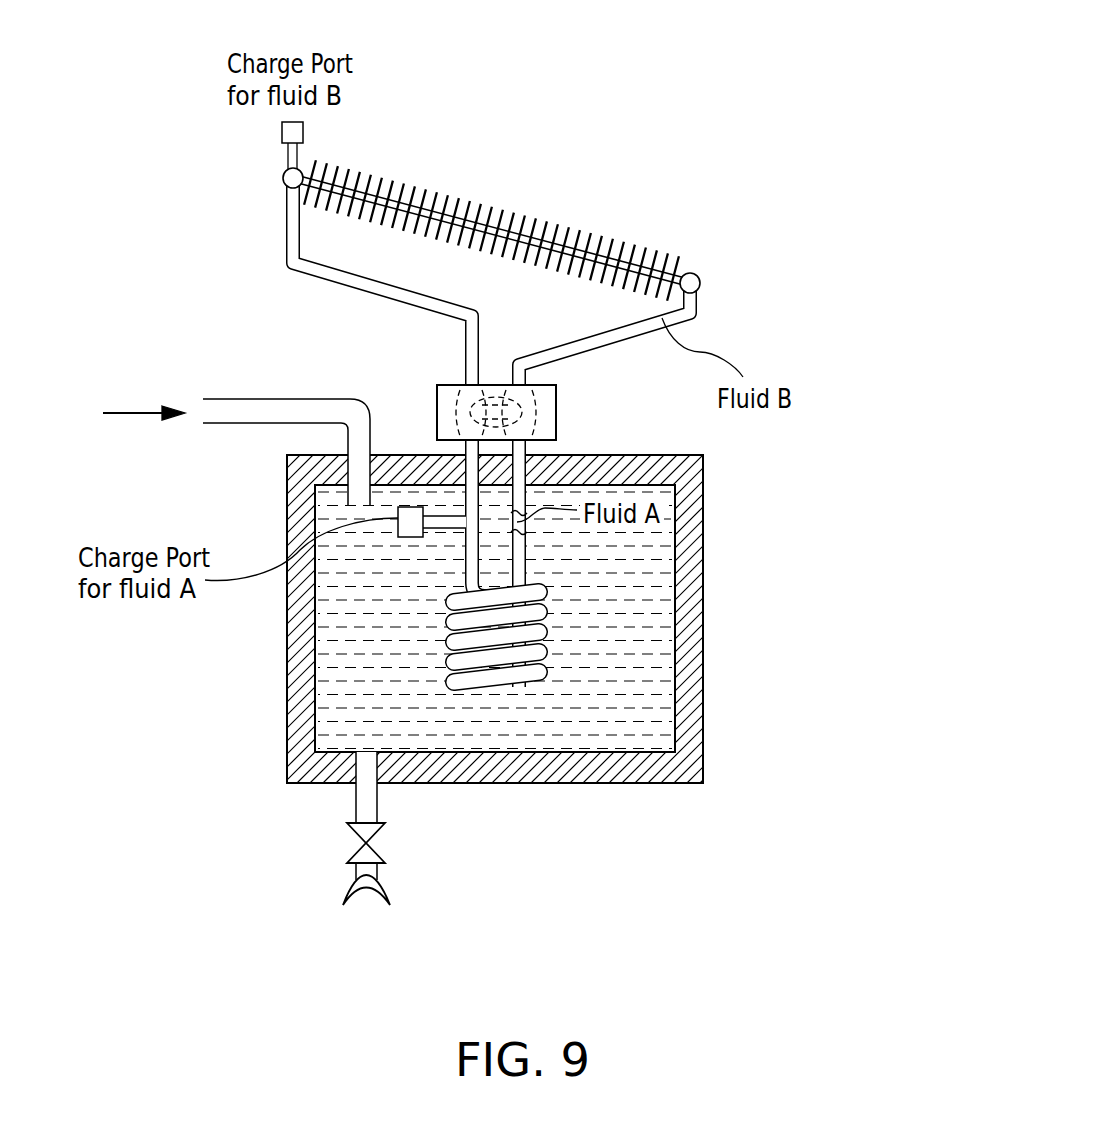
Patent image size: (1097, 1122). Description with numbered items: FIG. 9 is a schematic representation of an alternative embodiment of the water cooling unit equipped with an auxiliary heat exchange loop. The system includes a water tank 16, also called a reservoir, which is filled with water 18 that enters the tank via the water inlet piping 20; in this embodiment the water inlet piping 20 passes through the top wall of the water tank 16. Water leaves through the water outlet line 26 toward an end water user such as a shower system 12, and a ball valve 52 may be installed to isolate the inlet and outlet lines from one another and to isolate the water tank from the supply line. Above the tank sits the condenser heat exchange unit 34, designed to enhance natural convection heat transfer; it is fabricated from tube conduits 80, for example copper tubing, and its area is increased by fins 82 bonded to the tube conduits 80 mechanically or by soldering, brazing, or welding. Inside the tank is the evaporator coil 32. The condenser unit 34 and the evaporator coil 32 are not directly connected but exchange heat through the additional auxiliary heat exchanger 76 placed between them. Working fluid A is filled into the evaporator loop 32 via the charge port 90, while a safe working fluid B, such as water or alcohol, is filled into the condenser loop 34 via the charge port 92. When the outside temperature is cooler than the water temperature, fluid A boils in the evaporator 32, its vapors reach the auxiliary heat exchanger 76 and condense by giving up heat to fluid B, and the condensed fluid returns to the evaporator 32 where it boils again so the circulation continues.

The condenser heat exchange unit 34 is at (670, 91).
The tube conduits 80 is at (379, 179).
The fins 82 is at (537, 212).
The charge port 92 is at (280, 132).
The auxiliary heat exchange loop 76 is at (437, 417).
The water 18 is at (126, 412).
The water inlet piping 20 is at (263, 398).
The water tank 16 is at (703, 737).
The evaporator heat exchange unit 32 is at (543, 597).
The charge port 90 is at (408, 537).
The water outlet line 26 is at (356, 800).
The ball valve 52 is at (375, 848).
The shower system 12 is at (365, 893).